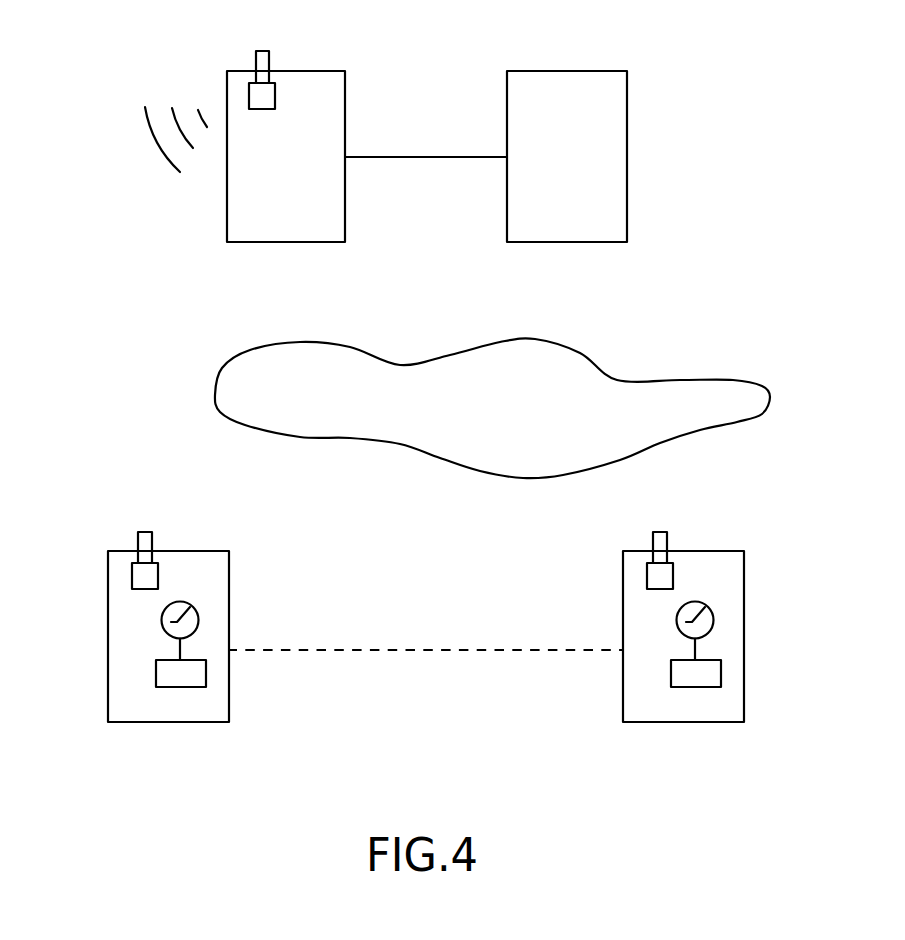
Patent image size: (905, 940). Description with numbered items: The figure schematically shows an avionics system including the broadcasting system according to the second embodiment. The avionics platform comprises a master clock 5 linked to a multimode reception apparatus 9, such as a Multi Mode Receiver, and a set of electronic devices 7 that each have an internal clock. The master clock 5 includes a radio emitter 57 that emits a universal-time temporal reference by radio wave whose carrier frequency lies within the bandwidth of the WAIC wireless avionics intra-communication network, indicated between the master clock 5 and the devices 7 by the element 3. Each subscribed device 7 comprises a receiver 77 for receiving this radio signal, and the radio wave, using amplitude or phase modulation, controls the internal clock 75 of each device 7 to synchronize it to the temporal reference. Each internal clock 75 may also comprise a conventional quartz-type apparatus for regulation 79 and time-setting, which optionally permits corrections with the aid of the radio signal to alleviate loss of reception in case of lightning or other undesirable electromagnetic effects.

The vehicle / object 3 is at (703, 387).
The master clock 5 is at (313, 70).
The multimode reception apparatus 9 is at (593, 70).
The radio emitter 57 is at (248, 97).
The electronic device 7 is at (108, 633).
The internal clock 75 is at (199, 623).
The receiver 77 is at (131, 575).
The apparatus for regulation 79 is at (197, 674).